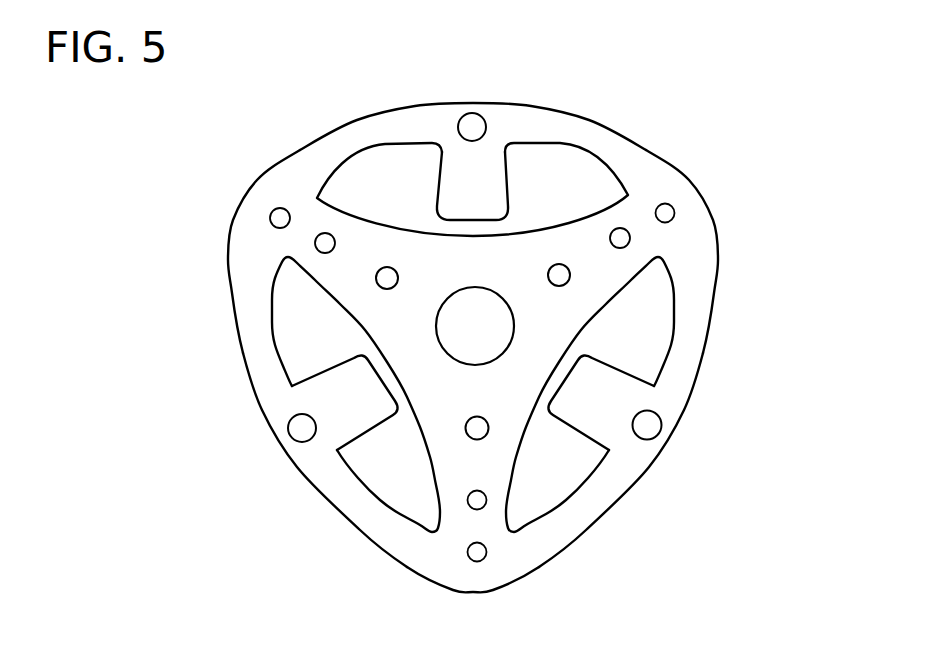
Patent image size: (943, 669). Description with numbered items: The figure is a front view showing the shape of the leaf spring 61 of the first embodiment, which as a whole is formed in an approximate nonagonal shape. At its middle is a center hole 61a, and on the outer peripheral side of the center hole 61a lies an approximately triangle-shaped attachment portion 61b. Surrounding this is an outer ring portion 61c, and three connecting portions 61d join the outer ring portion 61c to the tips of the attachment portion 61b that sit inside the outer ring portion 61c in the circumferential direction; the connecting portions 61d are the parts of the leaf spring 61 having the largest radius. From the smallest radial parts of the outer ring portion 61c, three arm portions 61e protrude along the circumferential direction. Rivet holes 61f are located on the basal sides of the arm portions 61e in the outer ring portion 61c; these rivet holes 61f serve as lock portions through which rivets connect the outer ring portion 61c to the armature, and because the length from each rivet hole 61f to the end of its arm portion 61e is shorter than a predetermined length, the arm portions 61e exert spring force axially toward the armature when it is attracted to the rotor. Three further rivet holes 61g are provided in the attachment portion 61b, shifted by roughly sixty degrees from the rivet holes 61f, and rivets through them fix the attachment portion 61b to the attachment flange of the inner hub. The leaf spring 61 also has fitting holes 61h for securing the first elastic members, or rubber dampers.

The leaf spring 61 is at (619, 127).
The center hole 61a is at (455, 358).
The attachment portion 61b is at (525, 253).
The outer ring portion 61c is at (510, 122).
The connecting portions 61d is at (307, 213).
The arm portions 61e is at (465, 187).
The rivet holes 61f is at (474, 125).
The rivet holes 61g is at (385, 280).
The fitting holes 61h is at (316, 246).